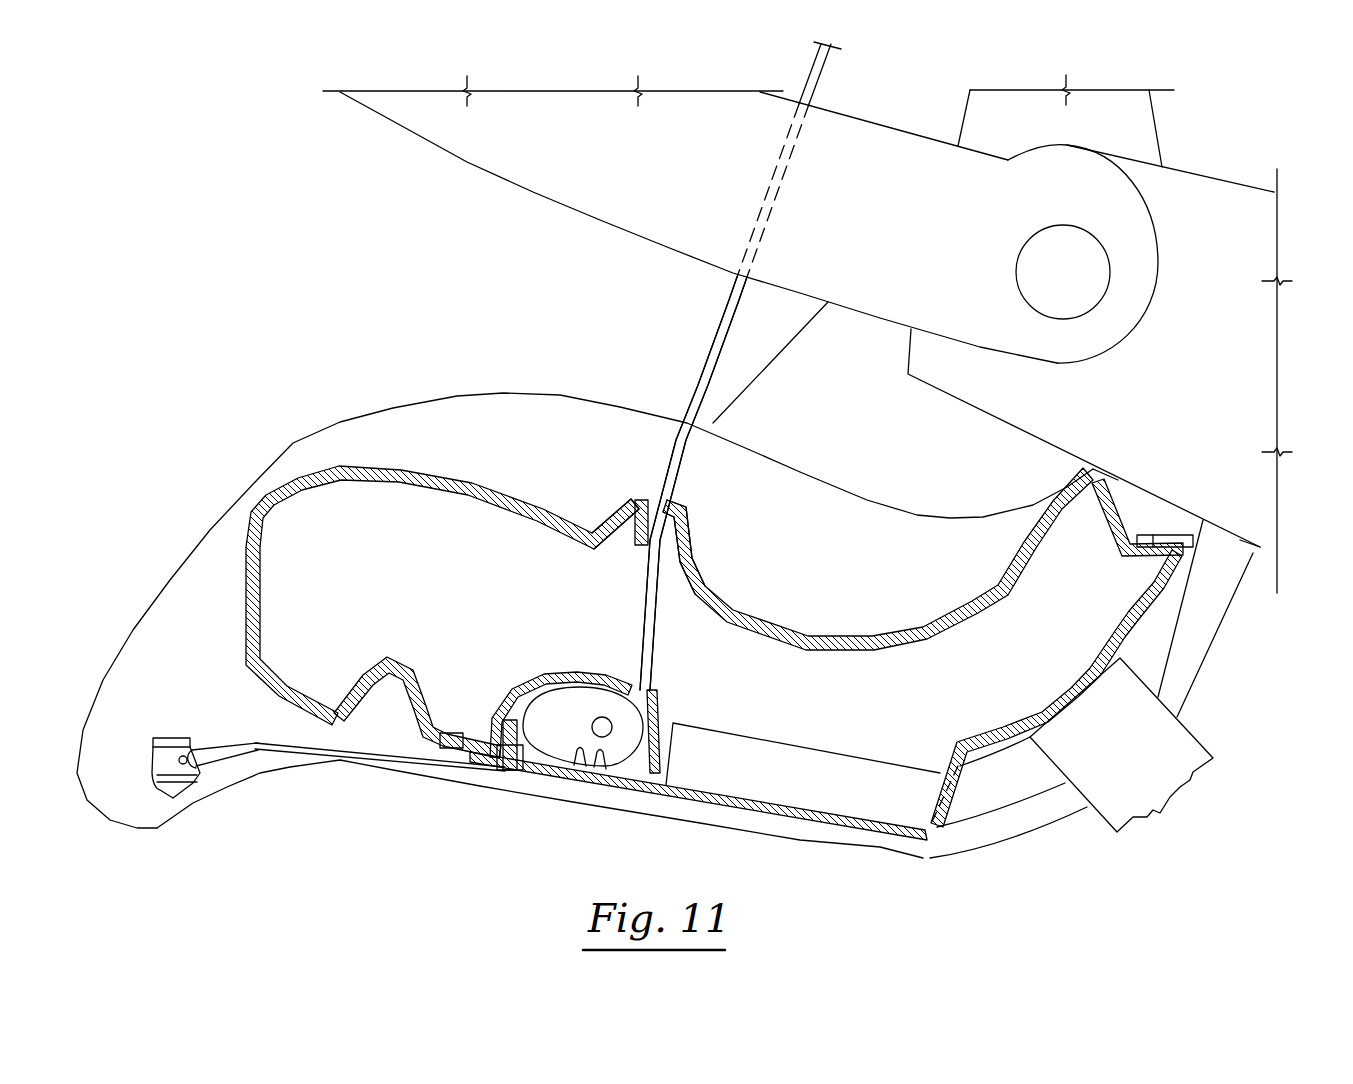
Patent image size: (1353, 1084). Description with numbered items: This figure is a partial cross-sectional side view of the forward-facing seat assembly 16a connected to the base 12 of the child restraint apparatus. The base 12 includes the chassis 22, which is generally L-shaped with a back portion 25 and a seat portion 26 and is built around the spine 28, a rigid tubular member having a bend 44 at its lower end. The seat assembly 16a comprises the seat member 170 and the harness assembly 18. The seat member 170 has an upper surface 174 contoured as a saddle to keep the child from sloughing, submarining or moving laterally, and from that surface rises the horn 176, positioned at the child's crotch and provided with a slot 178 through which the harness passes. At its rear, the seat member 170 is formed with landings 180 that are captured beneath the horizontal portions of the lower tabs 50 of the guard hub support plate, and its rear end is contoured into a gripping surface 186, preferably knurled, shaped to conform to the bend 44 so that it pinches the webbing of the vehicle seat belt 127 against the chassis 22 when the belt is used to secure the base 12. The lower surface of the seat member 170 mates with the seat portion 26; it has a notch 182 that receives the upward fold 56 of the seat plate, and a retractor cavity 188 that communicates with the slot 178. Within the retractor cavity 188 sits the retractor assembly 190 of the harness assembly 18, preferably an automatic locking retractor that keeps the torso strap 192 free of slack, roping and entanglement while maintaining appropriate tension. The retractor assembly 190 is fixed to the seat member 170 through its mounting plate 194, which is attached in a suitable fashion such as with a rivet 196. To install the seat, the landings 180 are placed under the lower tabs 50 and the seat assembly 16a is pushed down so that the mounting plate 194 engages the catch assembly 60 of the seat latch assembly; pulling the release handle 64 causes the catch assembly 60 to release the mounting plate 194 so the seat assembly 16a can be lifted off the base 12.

The base 12 is at (1195, 167).
The forward-facing seat assembly 16a is at (357, 461).
The harness assembly 18 is at (688, 385).
The chassis 22 is at (1227, 610).
The back portion 25 is at (1257, 553).
The seat portion 26 is at (825, 828).
The spine 28 is at (963, 812).
The bend 44 is at (1040, 778).
The lower tabs 50 is at (1167, 533).
The upward fold 56 is at (403, 702).
The catch assembly 60 is at (500, 722).
The release handle 64 is at (176, 798).
The seat belt 127 is at (1180, 740).
The seat member 170 is at (502, 495).
The upper surface 174 is at (803, 623).
The horn 176 is at (613, 512).
The slot 178 is at (667, 505).
The landings 180 is at (1150, 543).
The notch 182 is at (415, 668).
The gripping surface 186 is at (1130, 645).
The retractor cavity 188 is at (525, 688).
The retractor assembly 190 is at (555, 682).
The torso strap 192 is at (731, 300).
The mounting plate 194 is at (607, 760).
The rivet 196 is at (460, 737).